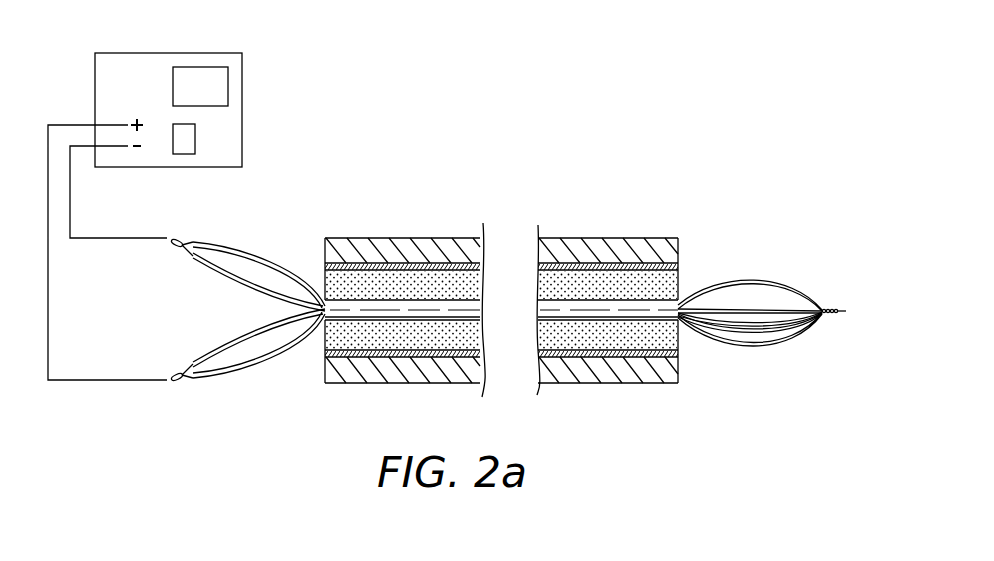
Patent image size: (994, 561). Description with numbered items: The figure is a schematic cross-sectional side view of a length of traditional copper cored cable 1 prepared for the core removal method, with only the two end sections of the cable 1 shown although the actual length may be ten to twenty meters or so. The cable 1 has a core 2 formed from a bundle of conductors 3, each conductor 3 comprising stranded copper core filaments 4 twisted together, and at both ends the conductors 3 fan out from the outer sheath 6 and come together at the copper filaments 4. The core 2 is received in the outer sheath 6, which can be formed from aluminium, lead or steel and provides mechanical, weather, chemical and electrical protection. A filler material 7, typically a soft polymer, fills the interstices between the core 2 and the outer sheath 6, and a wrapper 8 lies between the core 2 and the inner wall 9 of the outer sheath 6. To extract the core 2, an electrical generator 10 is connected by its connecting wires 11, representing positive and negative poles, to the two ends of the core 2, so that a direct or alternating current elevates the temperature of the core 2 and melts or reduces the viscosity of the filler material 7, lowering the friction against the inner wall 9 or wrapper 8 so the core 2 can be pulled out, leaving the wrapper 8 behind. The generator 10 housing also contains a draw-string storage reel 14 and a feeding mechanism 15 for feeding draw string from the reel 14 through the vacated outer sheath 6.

The cable 1 is at (444, 190).
The core 2 is at (238, 386).
The conductors 3 is at (262, 256).
The stranded copper core filaments 4 is at (172, 244).
The outer sheath 6 is at (383, 238).
The filler material 7 is at (586, 345).
The wrapper 8 is at (678, 269).
The inner wall 9 is at (590, 266).
The electrical generator 10 is at (165, 53).
The connecting wires 11 is at (70, 203).
The draw-string storage reel 14 is at (173, 82).
The feeding mechanism 15 is at (185, 155).